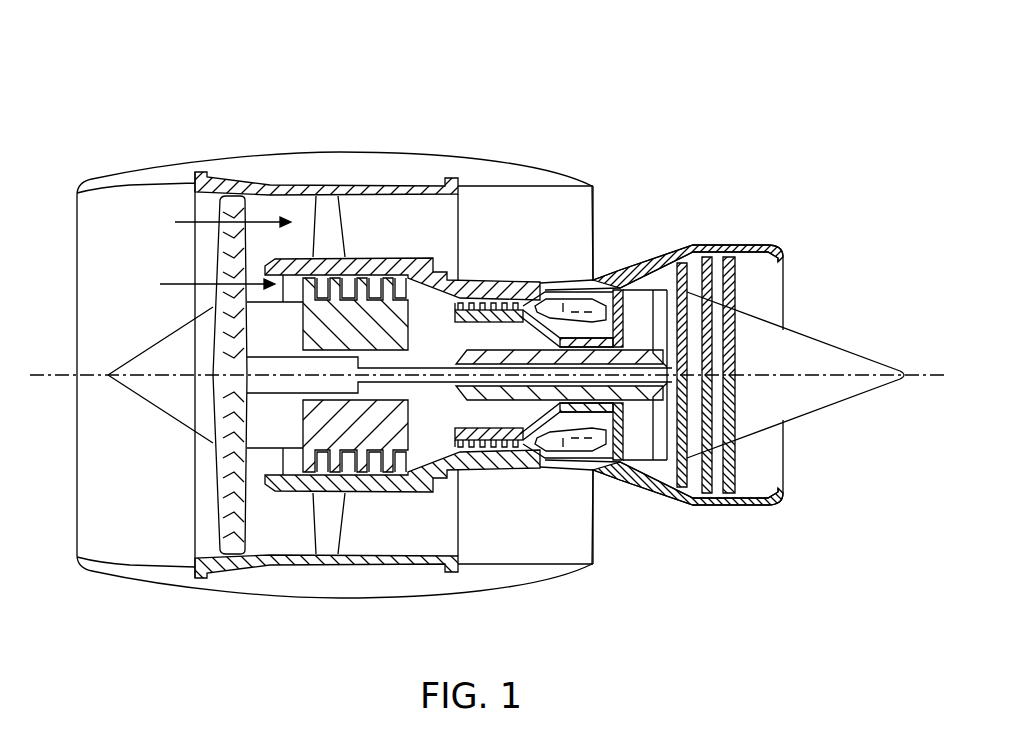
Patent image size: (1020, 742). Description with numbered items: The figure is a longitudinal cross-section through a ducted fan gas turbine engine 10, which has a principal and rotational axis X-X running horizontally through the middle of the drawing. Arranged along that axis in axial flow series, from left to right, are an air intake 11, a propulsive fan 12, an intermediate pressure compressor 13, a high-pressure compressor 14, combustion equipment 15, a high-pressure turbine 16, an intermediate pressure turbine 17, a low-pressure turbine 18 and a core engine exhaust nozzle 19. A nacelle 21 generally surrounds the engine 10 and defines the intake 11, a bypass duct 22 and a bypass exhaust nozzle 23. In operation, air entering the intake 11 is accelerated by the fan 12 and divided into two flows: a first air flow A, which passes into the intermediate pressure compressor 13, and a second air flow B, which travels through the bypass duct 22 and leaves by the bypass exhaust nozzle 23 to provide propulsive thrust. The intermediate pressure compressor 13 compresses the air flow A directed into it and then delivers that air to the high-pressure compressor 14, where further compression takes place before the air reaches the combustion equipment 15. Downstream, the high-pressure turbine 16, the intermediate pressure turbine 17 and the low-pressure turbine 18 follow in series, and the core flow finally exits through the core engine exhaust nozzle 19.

The ducted fan gas turbine engine 10 is at (487, 314).
The air intake 11 is at (132, 188).
The propulsive fan 12 is at (233, 517).
The intermediate pressure compressor 13 is at (373, 470).
The high-pressure compressor 14 is at (504, 306).
The combustion equipment 15 is at (540, 462).
The high-pressure turbine 16 is at (587, 477).
The intermediate pressure turbine 17 is at (663, 288).
The low-pressure turbine 18 is at (680, 475).
The core engine exhaust nozzle 19 is at (777, 243).
The nacelle 21 is at (347, 150).
The bypass duct 22 is at (546, 227).
The bypass exhaust nozzle 23 is at (593, 182).